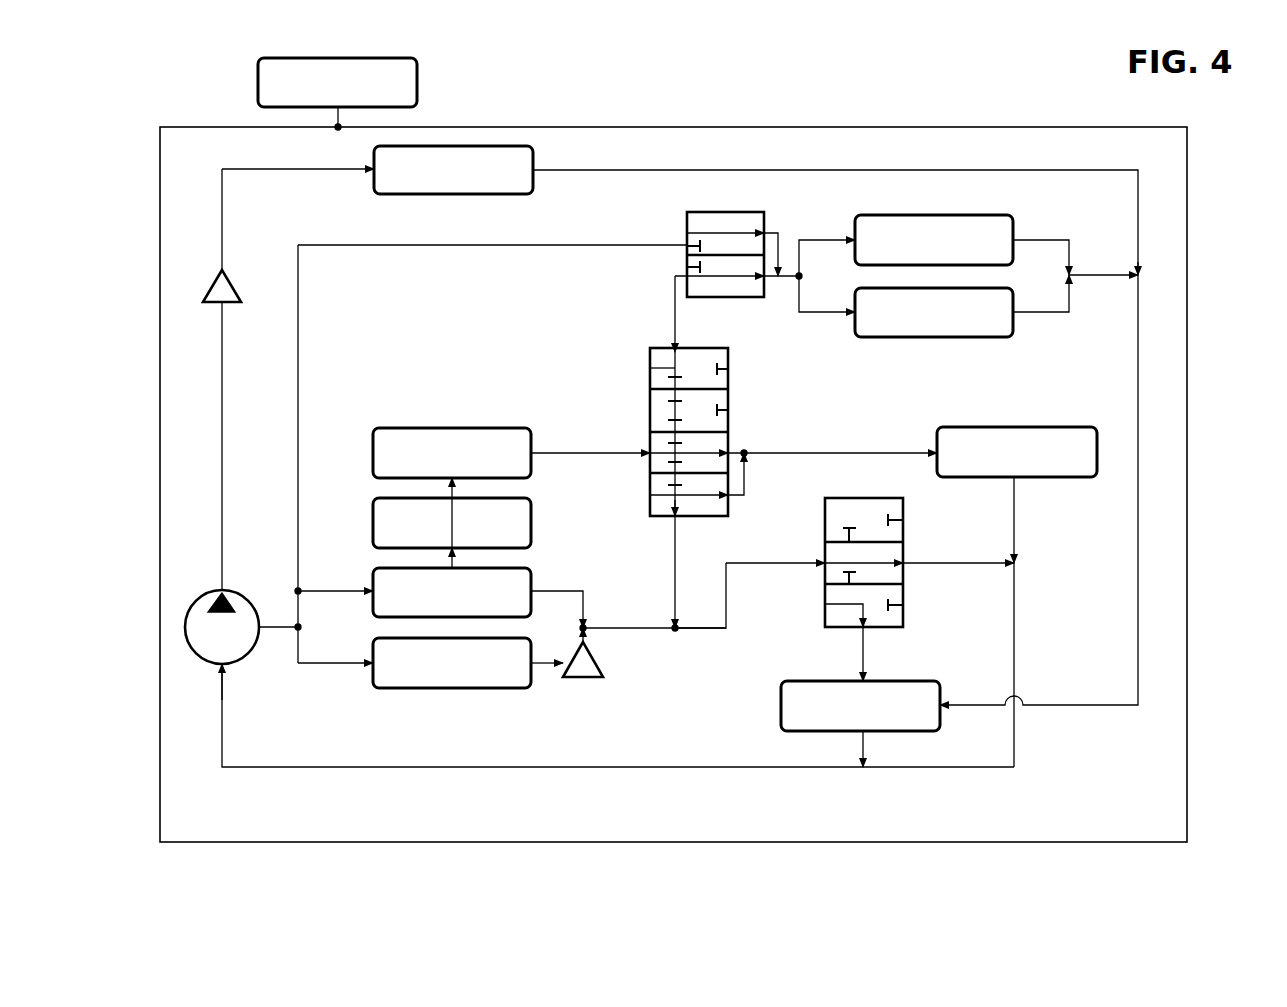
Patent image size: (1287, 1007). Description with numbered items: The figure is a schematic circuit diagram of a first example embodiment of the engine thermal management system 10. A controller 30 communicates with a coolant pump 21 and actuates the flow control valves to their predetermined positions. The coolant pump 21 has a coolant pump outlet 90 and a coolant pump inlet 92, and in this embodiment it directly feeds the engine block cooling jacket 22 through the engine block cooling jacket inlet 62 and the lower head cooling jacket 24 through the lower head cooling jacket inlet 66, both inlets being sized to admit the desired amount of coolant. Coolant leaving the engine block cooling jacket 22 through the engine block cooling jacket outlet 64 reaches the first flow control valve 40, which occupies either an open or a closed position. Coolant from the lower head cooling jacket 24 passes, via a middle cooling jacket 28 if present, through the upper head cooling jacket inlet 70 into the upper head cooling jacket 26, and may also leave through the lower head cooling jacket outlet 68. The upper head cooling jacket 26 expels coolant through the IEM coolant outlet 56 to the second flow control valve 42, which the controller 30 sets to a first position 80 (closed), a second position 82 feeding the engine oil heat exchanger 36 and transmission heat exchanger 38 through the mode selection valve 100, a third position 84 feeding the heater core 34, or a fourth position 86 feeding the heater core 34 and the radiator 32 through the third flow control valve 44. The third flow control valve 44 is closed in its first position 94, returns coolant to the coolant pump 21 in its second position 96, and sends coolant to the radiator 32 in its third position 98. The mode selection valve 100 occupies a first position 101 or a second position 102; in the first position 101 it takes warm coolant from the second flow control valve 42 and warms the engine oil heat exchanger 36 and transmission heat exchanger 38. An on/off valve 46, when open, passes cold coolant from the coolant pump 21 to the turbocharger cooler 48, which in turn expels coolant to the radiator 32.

The engine thermal management system 10 is at (963, 112).
The coolant pump 21 is at (243, 619).
The engine block cooling jacket 22 is at (452, 663).
The lower head cooling jacket 24 is at (452, 592).
The upper head cooling jacket 26 is at (452, 453).
The middle cooling jacket 28 is at (452, 523).
The controller 30 is at (337, 94).
The radiator 32 is at (618, 715).
The heater core 34 is at (912, 597).
The engine oil heat exchanger 36 is at (968, 245).
The transmission heat exchanger 38 is at (934, 306).
The first flow control valve 40 is at (600, 665).
The second flow control valve 42 is at (633, 379).
The third flow control valve 44 is at (790, 594).
The on/off valve 46 is at (225, 292).
The turbocharger cooler 48 is at (680, 425).
The IEM coolant outlet 56 is at (531, 447).
The engine block cooling jacket inlet 62 is at (373, 668).
The engine block cooling jacket outlet 64 is at (531, 672).
The lower head cooling jacket inlet 66 is at (373, 597).
The lower head cooling jacket outlet 68 is at (531, 600).
The upper head cooling jacket inlet 70 is at (457, 482).
The first position 80 is at (730, 411).
The second position 82 is at (730, 378).
The third position 84 is at (730, 446).
The fourth position 86 is at (730, 516).
The coolant pump outlet 90 is at (217, 594).
The coolant pump inlet 92 is at (222, 666).
The first position 94 is at (905, 527).
The second position 96 is at (905, 572).
The third position 98 is at (905, 612).
The mode selection valve 100 is at (697, 206).
The first position 101 is at (765, 288).
The second position 102 is at (758, 212).